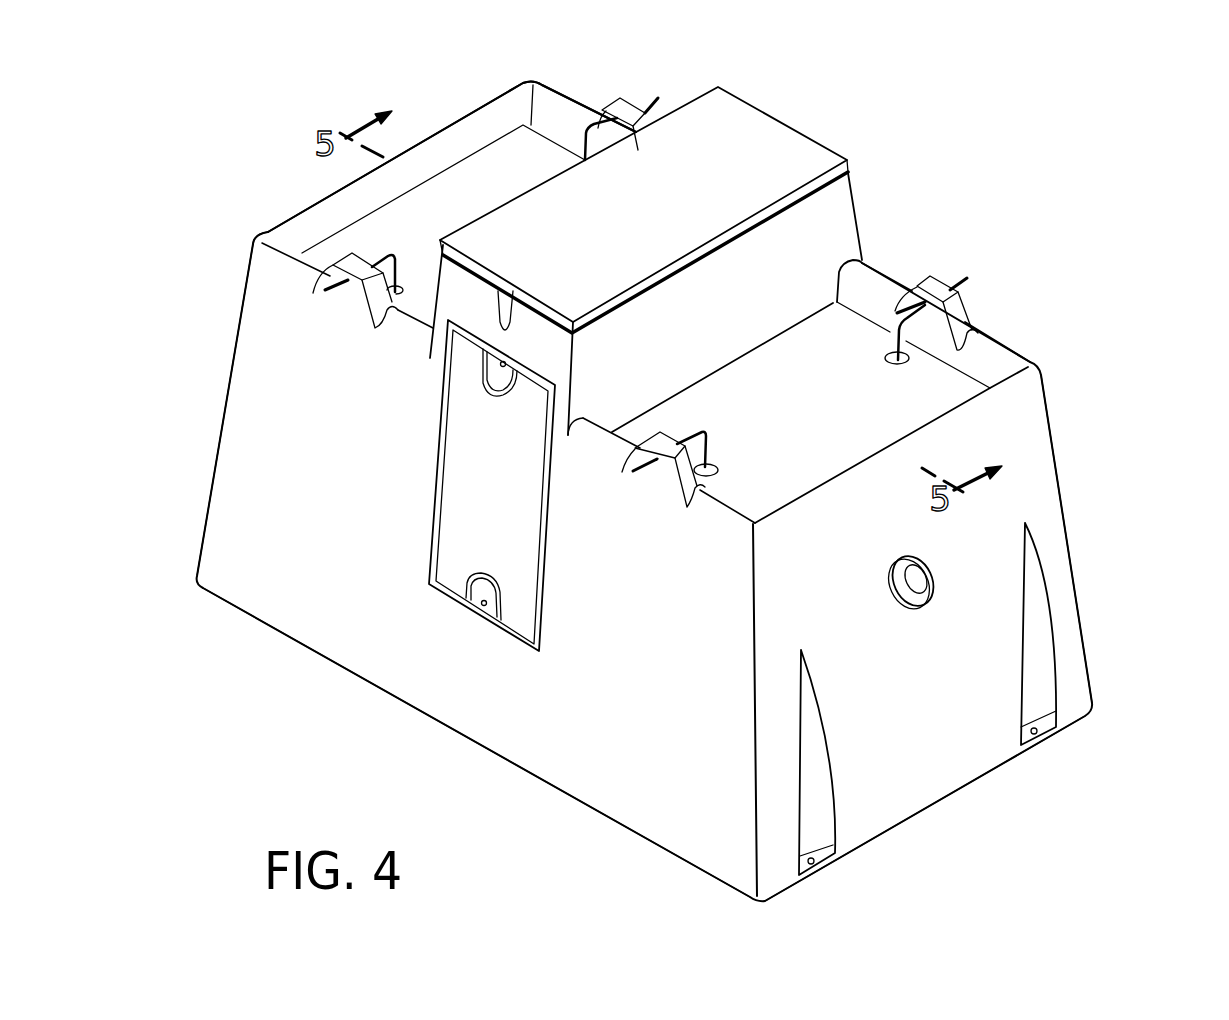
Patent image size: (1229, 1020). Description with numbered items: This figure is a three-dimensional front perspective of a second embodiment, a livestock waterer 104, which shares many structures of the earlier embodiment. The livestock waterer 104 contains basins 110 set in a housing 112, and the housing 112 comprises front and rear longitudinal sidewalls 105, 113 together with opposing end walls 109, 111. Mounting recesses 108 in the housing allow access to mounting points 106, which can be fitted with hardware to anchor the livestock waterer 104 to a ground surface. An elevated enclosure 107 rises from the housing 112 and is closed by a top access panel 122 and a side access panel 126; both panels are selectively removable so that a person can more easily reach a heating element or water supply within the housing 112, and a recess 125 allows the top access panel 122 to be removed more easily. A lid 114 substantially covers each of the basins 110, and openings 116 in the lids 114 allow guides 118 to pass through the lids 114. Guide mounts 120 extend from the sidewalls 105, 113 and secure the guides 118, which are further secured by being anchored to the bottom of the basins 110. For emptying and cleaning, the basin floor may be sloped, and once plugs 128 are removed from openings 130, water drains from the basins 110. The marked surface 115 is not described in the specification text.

The livestock waterer 104 is at (1108, 385).
The front longitudinal sidewall 105 is at (630, 783).
The mounting point 106 is at (1038, 723).
The elevated enclosure 107 is at (830, 223).
The mounting recess 108 is at (1030, 641).
The end wall 109 is at (885, 773).
The basin 110 is at (487, 140).
The end wall 111 is at (273, 230).
The housing 112 is at (267, 327).
The rear longitudinal sidewall 113 is at (1067, 527).
The lid 114 is at (540, 160).
The top surface 115 is at (705, 282).
The opening 116 is at (718, 470).
The guide 118 is at (917, 313).
The guide mount 120 is at (620, 100).
The top access panel 122 is at (760, 147).
The recess 125 is at (500, 310).
The side access panel 126 is at (460, 498).
The plug 128 is at (906, 581).
The opening 130 is at (930, 563).